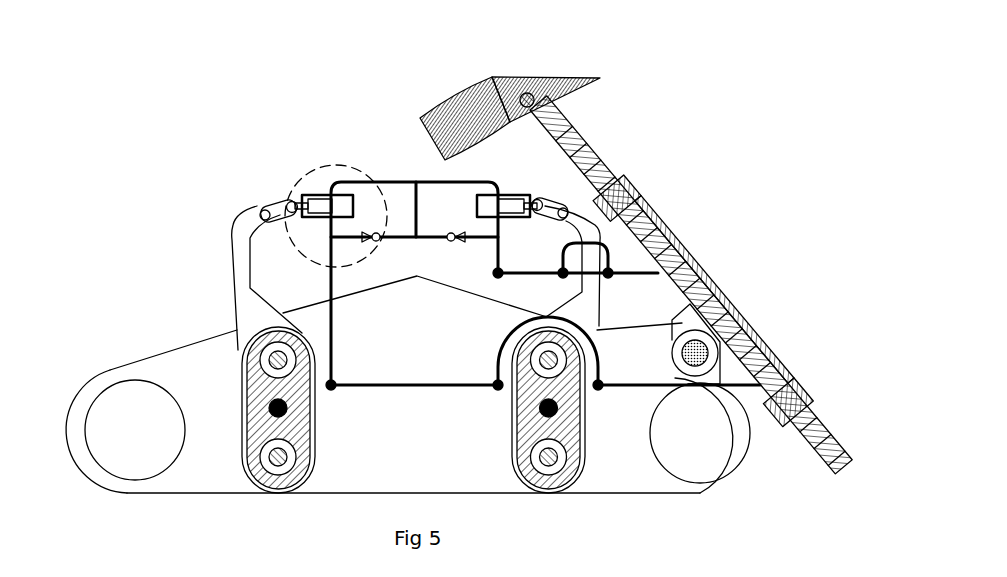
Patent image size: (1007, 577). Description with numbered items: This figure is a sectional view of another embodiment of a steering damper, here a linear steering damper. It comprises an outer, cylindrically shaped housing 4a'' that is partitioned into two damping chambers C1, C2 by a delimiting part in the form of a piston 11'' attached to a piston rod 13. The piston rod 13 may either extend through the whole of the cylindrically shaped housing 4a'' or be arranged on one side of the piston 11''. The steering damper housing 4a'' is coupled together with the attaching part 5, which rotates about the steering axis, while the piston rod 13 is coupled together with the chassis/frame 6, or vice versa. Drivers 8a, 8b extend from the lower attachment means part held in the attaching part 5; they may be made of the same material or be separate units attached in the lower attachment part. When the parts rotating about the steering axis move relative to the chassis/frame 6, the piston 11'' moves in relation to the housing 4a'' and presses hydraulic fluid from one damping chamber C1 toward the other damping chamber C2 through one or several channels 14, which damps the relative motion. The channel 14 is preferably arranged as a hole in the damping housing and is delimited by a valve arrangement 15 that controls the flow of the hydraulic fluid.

The attaching part 5 is at (217, 390).
The chassis/frame 6 is at (435, 110).
The driver 8a is at (245, 275).
The driver 8b is at (577, 315).
The piston rod 13 is at (650, 247).
The channel 14 is at (433, 182).
The valve arrangement 15 is at (292, 185).
The damping chamber C1 is at (683, 260).
The cylindrically shaped housing 4a'' is at (716, 289).
The piston 11'' is at (757, 324).
The damping chamber C2 is at (777, 363).